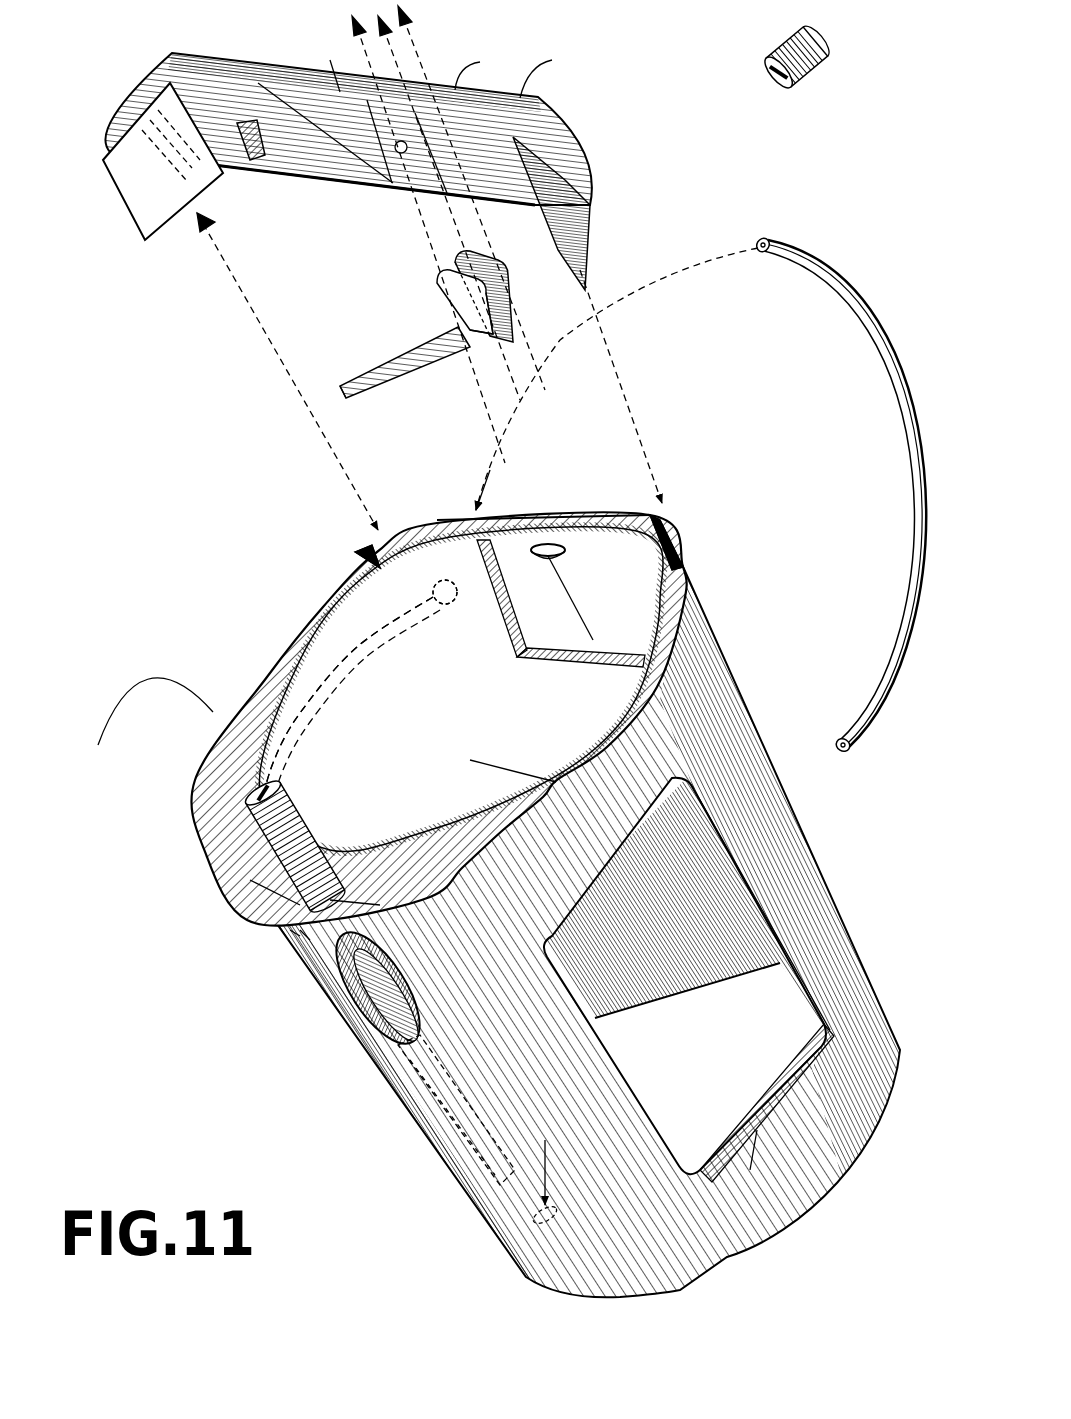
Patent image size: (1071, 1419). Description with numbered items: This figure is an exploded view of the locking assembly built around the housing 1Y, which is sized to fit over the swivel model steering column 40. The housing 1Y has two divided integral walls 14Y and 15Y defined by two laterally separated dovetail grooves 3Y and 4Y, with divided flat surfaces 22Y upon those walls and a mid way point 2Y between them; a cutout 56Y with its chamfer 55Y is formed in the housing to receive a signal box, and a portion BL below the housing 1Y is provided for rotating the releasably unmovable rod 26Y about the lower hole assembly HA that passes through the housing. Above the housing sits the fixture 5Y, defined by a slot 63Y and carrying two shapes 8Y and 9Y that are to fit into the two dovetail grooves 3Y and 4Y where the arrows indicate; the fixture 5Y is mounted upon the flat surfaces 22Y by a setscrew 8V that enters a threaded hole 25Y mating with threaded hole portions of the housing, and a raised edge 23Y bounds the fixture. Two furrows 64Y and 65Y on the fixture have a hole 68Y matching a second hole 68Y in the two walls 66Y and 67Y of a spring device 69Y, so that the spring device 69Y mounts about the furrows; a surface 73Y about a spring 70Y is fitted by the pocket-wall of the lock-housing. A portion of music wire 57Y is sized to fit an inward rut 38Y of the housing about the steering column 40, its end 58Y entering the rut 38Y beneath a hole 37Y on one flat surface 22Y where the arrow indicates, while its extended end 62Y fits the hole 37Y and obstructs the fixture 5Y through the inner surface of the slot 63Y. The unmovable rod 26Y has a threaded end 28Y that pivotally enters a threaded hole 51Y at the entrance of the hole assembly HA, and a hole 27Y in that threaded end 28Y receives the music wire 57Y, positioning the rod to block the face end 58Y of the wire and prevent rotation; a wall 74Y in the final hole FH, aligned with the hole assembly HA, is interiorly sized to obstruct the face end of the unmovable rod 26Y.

The housing 1Y is at (706, 626).
The mid way point 2Y is at (548, 540).
The dovetail groove 3Y is at (382, 556).
The dovetail groove 4Y is at (664, 521).
The fixture 5Y is at (360, 181).
The shape 8Y is at (146, 246).
The setscrew 8V is at (812, 26).
The shape 9Y is at (584, 242).
The divided integral wall 14Y is at (143, 716).
The divided integral wall 15Y is at (495, 752).
The flat surface 22Y is at (448, 514).
The cover edge 23Y is at (553, 72).
The threaded hole 25Y is at (783, 88).
The unmovable rod 26Y is at (498, 1110).
The hole 27Y is at (262, 824).
The threaded end 28Y is at (286, 871).
The hole 37Y is at (440, 602).
The rut 38Y is at (290, 735).
The steering column 40 is at (598, 742).
The threaded hole 51Y is at (352, 896).
The chamfer 55Y is at (765, 1163).
The cutout 56Y is at (590, 880).
The music wire 57Y is at (800, 256).
The end of music wire 58Y is at (757, 240).
The extended end 62Y is at (848, 752).
The slot 63Y is at (258, 162).
The furrow 64Y is at (483, 68).
The furrow 65Y is at (319, 65).
The wall 66Y is at (512, 312).
The wall 67Y is at (476, 346).
The hole 68Y is at (393, 186).
The spring device 69Y is at (467, 334).
The spring 70Y is at (402, 358).
The surface 73Y is at (360, 396).
The wall 74Y is at (556, 1222).
The hole assembly HA is at (402, 872).
The portion below housing BL is at (290, 930).
The final hole FH is at (548, 1163).